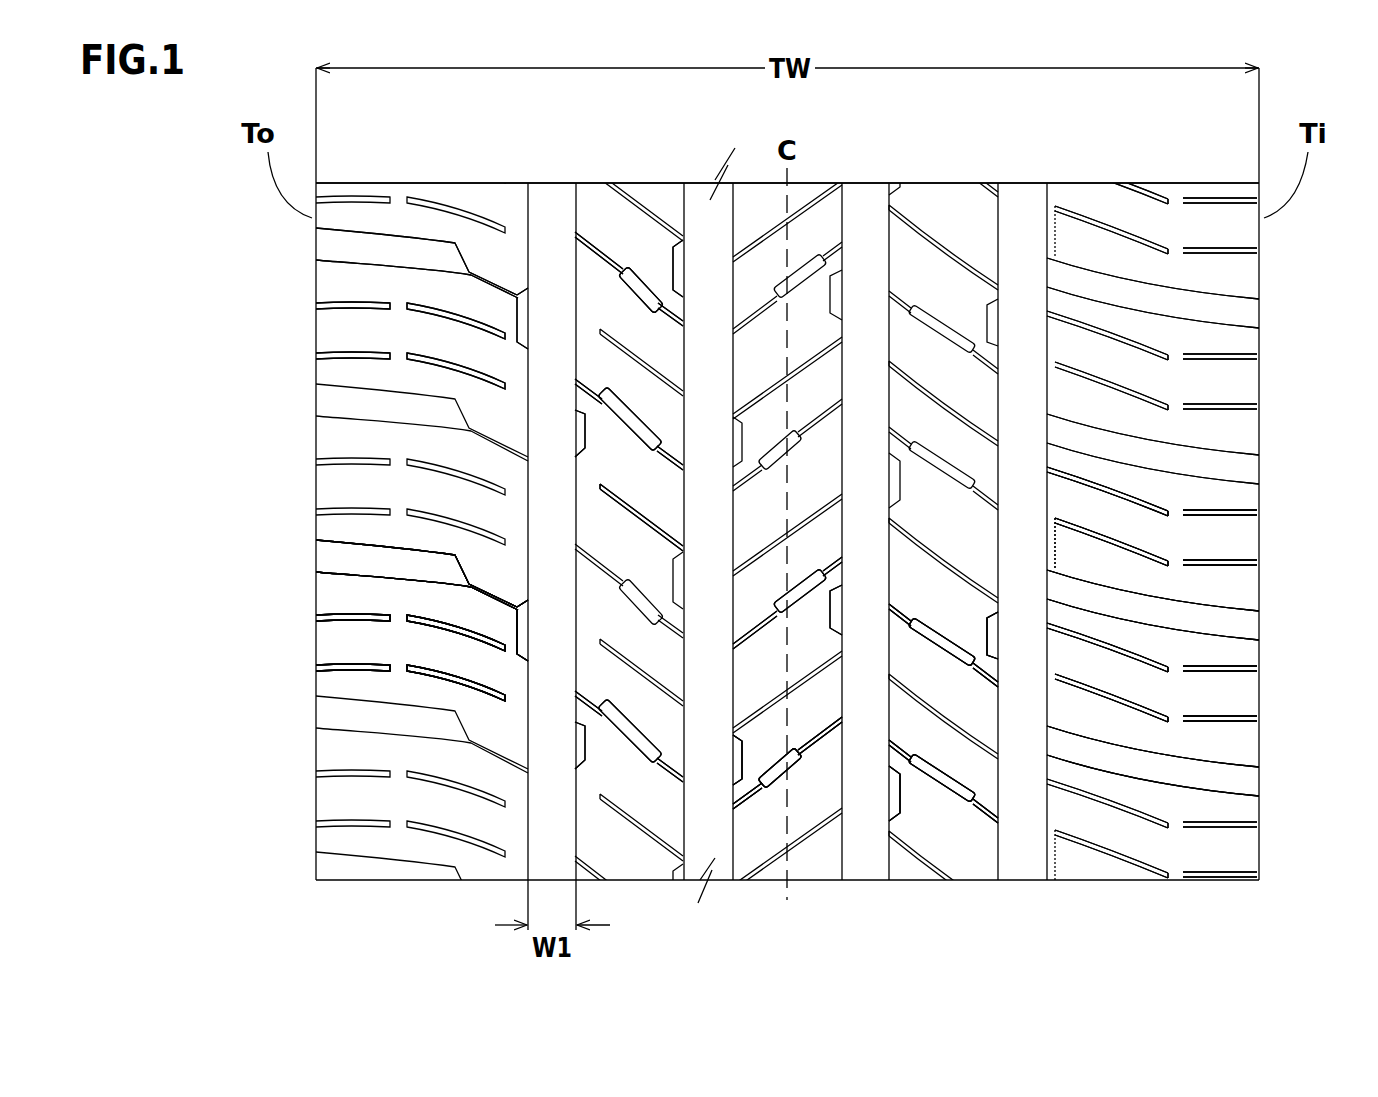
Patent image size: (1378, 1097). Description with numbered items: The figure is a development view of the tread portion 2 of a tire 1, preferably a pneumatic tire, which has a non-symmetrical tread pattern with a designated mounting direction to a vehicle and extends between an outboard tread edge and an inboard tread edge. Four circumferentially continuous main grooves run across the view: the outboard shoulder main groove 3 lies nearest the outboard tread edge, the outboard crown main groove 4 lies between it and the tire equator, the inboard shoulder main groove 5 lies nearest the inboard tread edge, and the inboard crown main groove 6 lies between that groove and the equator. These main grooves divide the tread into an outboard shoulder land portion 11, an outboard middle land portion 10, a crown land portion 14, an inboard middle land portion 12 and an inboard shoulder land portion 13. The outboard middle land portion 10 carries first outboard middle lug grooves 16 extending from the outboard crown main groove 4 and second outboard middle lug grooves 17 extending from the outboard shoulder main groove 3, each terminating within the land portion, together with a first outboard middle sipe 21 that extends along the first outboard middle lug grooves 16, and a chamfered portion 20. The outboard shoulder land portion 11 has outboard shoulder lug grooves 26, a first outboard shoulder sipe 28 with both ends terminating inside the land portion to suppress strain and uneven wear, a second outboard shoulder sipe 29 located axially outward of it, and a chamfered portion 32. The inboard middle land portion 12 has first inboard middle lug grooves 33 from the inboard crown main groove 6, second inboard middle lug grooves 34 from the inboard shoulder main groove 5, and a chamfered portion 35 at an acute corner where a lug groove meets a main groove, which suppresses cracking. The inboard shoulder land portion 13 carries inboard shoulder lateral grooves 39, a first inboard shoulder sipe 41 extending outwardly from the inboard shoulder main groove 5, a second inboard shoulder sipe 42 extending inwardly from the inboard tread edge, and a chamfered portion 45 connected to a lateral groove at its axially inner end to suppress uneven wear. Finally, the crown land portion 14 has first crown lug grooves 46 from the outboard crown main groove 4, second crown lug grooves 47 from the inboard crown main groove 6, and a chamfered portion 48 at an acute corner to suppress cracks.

The tire 1 is at (819, 172).
The tread portion 2 is at (918, 172).
The outboard shoulder main groove 3 is at (549, 243).
The outboard crown main groove 4 is at (703, 240).
The inboard shoulder main groove 5 is at (1022, 240).
The inboard crown main groove 6 is at (862, 240).
The outboard middle land portion 10 is at (618, 237).
The outboard shoulder land portion 11 is at (426, 232).
The inboard middle land portion 12 is at (946, 235).
The inboard shoulder land portion 13 is at (1145, 234).
The crown land portion 14 is at (765, 232).
The first outboard middle lug groove 16 is at (653, 297).
The second outboard middle lug groove 17 is at (620, 422).
The chamfered portion 20 is at (577, 742).
The first outboard middle sipe 21 is at (633, 510).
The outboard shoulder lug groove 26 is at (395, 247).
The first outboard shoulder sipe 28 is at (447, 677).
The second outboard shoulder sipe 29 is at (350, 612).
The chamfered portion 32 is at (520, 643).
The first inboard middle lug groove 33 is at (945, 795).
The second inboard middle lug groove 34 is at (946, 642).
The chamfered portion 35 is at (995, 640).
The inboard shoulder lateral groove 39 is at (1167, 315).
The first inboard shoulder sipe 41 is at (1105, 497).
The second inboard shoulder sipe 42 is at (1220, 407).
The chamfered portion 45 is at (1058, 548).
The first crown lug groove 46 is at (762, 790).
The second crown lug groove 47 is at (803, 598).
The chamfered portion 48 is at (737, 765).